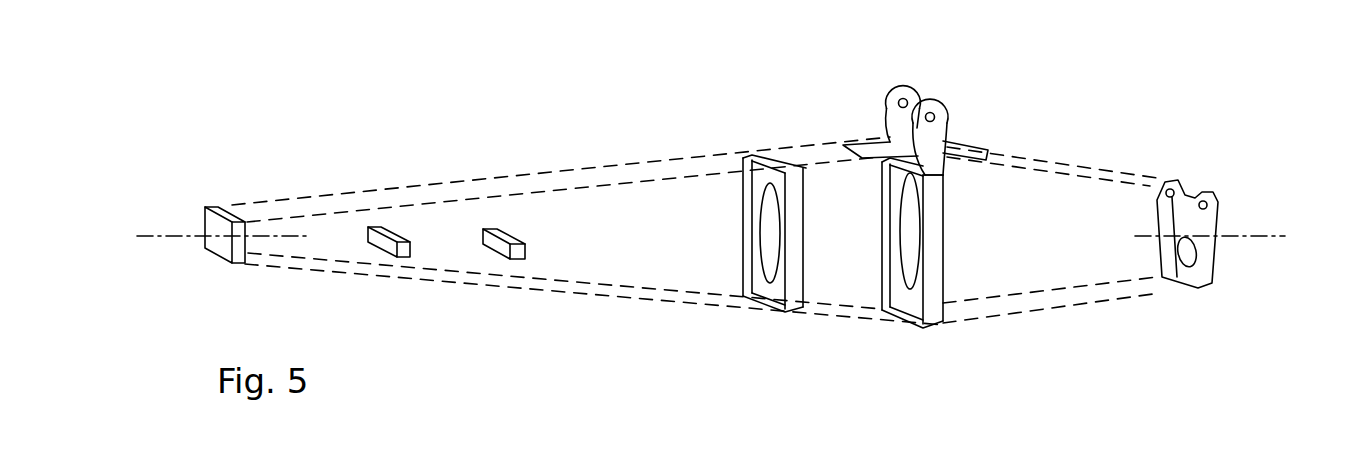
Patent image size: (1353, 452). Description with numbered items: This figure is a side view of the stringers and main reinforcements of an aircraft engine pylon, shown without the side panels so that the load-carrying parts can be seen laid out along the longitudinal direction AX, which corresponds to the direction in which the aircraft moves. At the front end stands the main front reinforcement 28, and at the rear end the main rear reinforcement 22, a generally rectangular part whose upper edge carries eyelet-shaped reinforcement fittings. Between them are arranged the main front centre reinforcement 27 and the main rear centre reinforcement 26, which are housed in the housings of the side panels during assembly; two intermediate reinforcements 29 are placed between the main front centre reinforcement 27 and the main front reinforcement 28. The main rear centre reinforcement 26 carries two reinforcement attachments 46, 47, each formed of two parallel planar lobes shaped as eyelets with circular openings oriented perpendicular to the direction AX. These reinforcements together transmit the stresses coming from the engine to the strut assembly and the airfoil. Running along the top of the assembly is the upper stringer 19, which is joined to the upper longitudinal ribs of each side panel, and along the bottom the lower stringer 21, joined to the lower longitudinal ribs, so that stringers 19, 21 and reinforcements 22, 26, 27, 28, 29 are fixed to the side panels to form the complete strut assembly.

The upper stringer 19 is at (580, 185).
The lower stringer 21 is at (460, 281).
The main rear reinforcement 22 is at (1205, 253).
The main rear centre reinforcement 26 is at (903, 298).
The main front centre reinforcement 27 is at (765, 292).
The main front reinforcement 28 is at (215, 225).
The intermediate reinforcements 29 is at (498, 243).
The reinforcement attachment 46 is at (905, 93).
The reinforcement attachment 47 is at (942, 120).
The longitudinal direction AX is at (1258, 235).